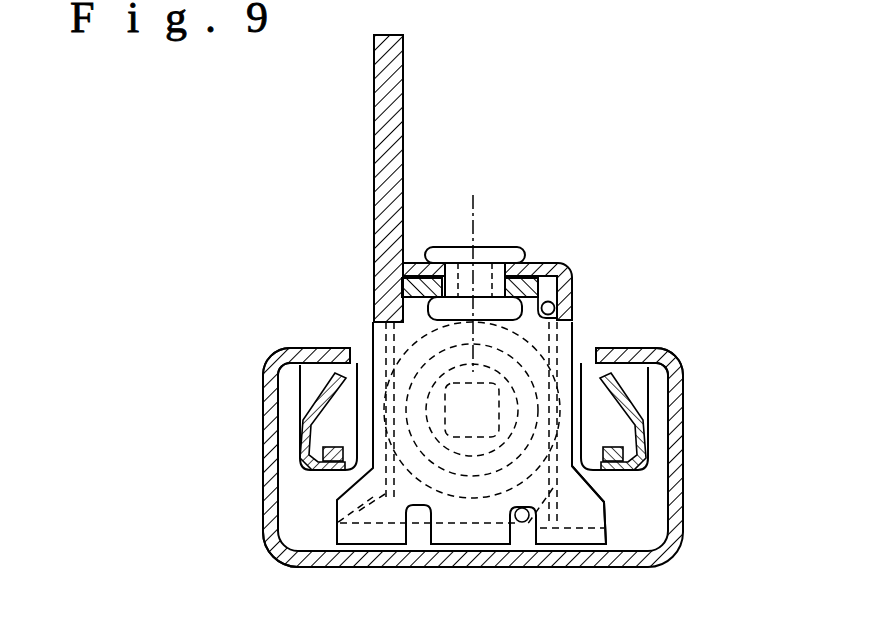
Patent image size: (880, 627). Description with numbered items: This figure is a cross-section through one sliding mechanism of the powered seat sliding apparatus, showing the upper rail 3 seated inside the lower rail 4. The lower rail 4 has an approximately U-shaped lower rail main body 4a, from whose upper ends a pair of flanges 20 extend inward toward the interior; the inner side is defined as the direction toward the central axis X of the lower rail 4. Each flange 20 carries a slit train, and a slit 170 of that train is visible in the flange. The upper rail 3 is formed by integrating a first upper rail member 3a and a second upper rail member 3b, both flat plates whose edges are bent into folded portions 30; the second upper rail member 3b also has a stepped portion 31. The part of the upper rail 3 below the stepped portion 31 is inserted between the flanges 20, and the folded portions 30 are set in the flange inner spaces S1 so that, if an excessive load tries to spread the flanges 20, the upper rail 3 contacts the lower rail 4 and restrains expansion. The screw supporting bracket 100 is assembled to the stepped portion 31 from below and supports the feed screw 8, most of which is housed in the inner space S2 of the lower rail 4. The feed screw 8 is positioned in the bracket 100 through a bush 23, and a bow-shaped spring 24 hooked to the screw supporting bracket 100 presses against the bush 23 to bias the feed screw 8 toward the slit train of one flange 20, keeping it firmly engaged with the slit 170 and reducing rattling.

The upper rail 3 is at (420, 108).
The first upper rail member 3a is at (375, 179).
The second upper rail member 3b is at (403, 142).
The lower rail 4 is at (260, 493).
The lower rail main body 4a is at (265, 517).
The feed screw 8 is at (574, 343).
The flanges 20 is at (298, 347).
The bush 23 is at (562, 270).
The spring 24 is at (341, 521).
The folded portions 30 is at (300, 440).
The stepped portion 31 is at (550, 263).
The screw supporting bracket 100 is at (598, 519).
The slit 170 is at (345, 352).
The flange inner space S1 is at (334, 438).
The inner space S2 is at (500, 348).
The central axis X is at (472, 266).